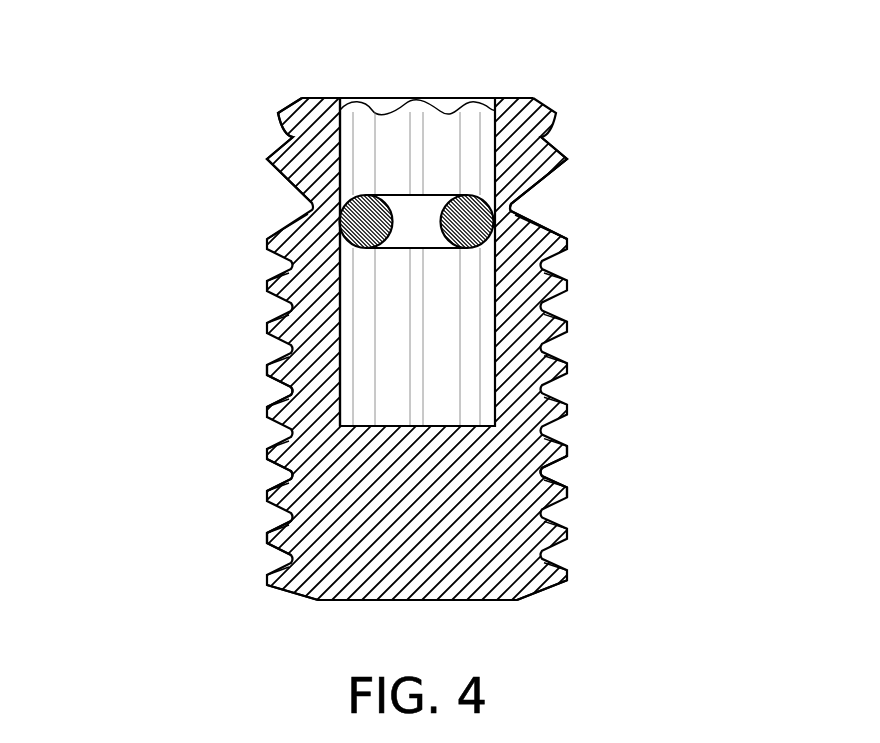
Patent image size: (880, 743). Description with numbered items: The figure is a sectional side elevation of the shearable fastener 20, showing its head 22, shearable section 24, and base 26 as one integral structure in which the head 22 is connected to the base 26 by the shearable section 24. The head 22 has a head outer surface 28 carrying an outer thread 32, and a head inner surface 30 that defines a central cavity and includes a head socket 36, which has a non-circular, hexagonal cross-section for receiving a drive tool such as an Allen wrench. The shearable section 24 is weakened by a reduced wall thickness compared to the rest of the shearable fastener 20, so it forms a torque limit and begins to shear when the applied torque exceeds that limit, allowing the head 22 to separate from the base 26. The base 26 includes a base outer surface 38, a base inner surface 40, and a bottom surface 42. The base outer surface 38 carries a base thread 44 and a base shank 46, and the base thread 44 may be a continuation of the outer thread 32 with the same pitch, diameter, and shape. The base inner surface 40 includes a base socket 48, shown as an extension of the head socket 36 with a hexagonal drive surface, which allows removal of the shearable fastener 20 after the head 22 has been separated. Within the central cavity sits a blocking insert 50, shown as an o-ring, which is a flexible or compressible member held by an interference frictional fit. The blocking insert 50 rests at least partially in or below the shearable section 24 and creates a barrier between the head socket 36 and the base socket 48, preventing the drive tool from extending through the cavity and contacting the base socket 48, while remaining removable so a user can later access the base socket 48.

The shearable fastener 20 is at (659, 287).
The head 22 is at (252, 154).
The shearable section 24 is at (523, 204).
The base 26 is at (191, 385).
The head outer surface 28 is at (579, 152).
The head inner surface 30 is at (443, 132).
The outer thread 32 is at (278, 113).
The head socket 36 is at (340, 141).
The base outer surface 38 is at (583, 488).
The base inner surface 40 is at (469, 377).
The bottom surface 42 is at (337, 600).
The base thread 44 is at (274, 540).
The base shank 46 is at (293, 477).
The base socket 48 is at (469, 427).
The blocking insert 50 is at (345, 213).